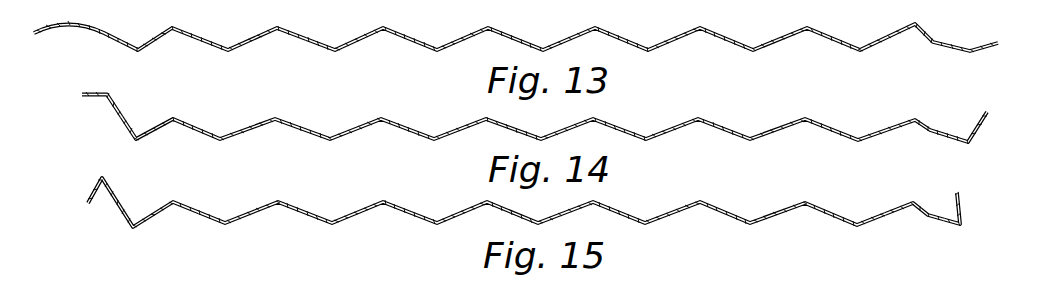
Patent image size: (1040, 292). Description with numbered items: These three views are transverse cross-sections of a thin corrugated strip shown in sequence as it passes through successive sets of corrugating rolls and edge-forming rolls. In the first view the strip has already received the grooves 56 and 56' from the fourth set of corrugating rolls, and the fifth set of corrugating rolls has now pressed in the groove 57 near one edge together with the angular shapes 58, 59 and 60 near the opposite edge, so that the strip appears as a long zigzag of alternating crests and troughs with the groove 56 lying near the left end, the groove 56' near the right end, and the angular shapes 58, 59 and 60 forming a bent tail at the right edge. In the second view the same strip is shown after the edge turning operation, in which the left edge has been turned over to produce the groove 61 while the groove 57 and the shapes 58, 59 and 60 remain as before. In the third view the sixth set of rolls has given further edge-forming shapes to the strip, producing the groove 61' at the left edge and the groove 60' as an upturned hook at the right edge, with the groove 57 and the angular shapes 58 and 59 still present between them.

In FIG. 13, the groove 56 is at (253, 26).
In FIG. 13, the groove 56' is at (861, 29).
In FIG. 13, the groove 57 is at (139, 46).
In FIG. 14, the groove 57 is at (138, 135).
In FIG. 15, the groove 57 is at (134, 222).
In FIG. 13, the angular shape 58 is at (913, 31).
In FIG. 14, the angular shape 58 is at (914, 126).
In FIG. 15, the angular shape 58 is at (912, 208).
In FIG. 13, the angular shape 59 is at (931, 41).
In FIG. 14, the angular shape 59 is at (931, 129).
In FIG. 15, the angular shape 59 is at (929, 213).
In FIG. 13, the angular shape 60 is at (975, 30).
In FIG. 14, the angular shape 60 is at (968, 115).
In FIG. 15, the groove 60' is at (959, 196).
In FIG. 14, the groove 61 is at (96, 114).
In FIG. 15, the groove 61' is at (102, 209).